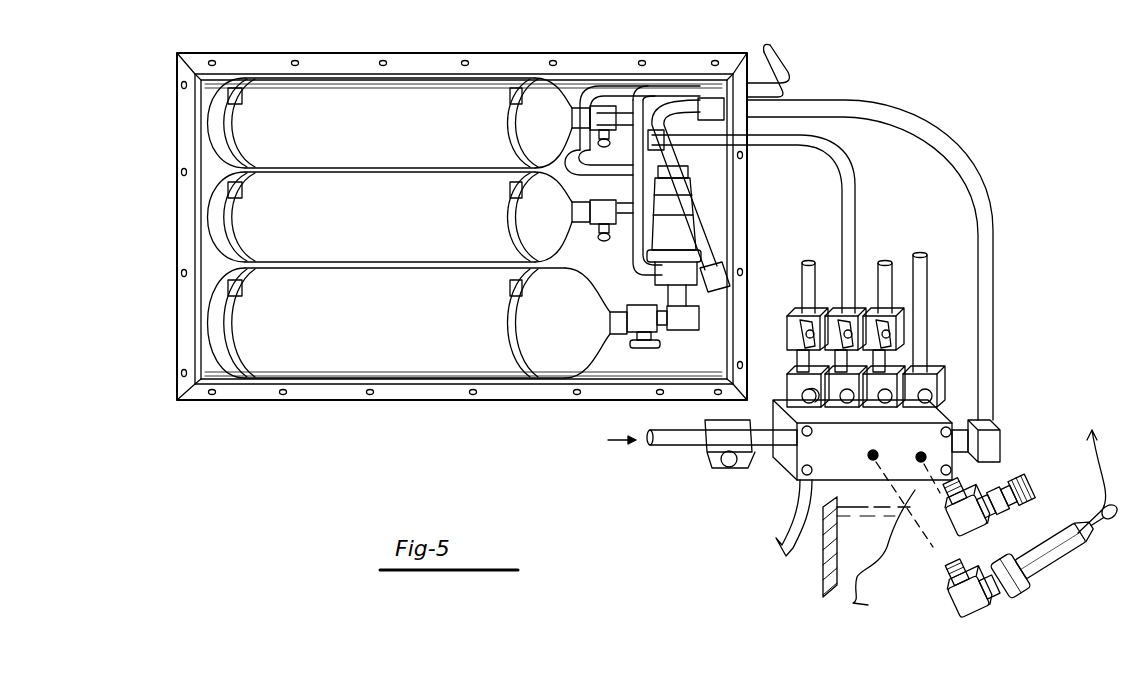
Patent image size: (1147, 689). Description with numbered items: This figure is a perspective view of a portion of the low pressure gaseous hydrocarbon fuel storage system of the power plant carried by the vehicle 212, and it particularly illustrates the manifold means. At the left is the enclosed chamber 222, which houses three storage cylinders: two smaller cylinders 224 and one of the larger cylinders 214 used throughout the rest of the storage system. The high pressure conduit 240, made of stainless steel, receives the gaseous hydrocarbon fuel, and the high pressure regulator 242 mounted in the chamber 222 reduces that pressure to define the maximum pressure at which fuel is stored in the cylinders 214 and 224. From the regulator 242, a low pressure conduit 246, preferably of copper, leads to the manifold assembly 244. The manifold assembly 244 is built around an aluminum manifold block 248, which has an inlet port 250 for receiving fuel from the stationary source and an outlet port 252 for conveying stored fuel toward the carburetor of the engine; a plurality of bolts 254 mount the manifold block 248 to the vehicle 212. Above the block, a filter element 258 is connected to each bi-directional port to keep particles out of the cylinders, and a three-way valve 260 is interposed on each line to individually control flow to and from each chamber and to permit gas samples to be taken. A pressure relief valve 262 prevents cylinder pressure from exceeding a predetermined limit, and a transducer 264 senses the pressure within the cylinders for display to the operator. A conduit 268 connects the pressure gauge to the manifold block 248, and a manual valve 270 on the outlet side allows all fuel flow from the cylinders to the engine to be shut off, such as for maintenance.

The vehicle 212 is at (868, 605).
The cylinders 214 is at (394, 322).
The chamber 222 is at (630, 20).
The cylinders 224 is at (396, 141).
The high pressure conduit 240 is at (795, 66).
The high pressure regulator 242 is at (702, 218).
The manifold assembly 244 is at (1008, 354).
The low pressure conduit 246 is at (985, 172).
The manifold block 248 is at (915, 451).
The inlet port 250 is at (938, 420).
The outlet port 252 is at (775, 468).
The bolts 254 is at (798, 470).
The filter element 258 is at (786, 386).
The three-way valve 260 is at (785, 318).
The pressure relief valve 262 is at (1012, 492).
The transducer 264 is at (1062, 560).
The conduit 268 is at (792, 552).
The manual valve 270 is at (720, 462).